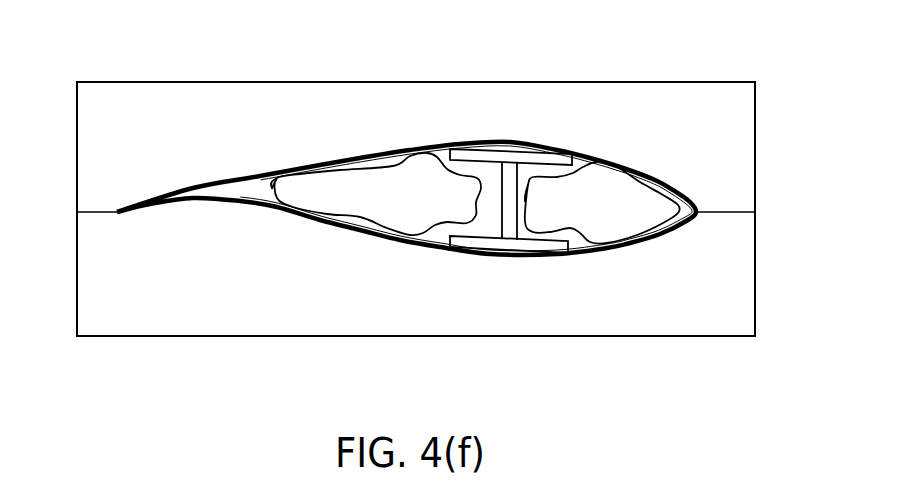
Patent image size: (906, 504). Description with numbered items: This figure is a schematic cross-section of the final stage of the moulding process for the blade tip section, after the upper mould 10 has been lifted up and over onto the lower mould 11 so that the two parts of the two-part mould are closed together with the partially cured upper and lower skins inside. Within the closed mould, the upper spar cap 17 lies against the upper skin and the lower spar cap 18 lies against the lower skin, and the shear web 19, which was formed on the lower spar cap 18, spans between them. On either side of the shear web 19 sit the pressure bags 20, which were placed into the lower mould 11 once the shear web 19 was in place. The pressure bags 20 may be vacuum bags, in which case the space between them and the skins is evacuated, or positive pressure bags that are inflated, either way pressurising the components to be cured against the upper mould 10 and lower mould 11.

The upper mould 10 is at (712, 100).
The lower mould 11 is at (715, 306).
The upper spar cap 17 is at (518, 152).
The lower spar cap 18 is at (530, 248).
The shear web 19 is at (507, 190).
The pressure bags 20 is at (370, 208).